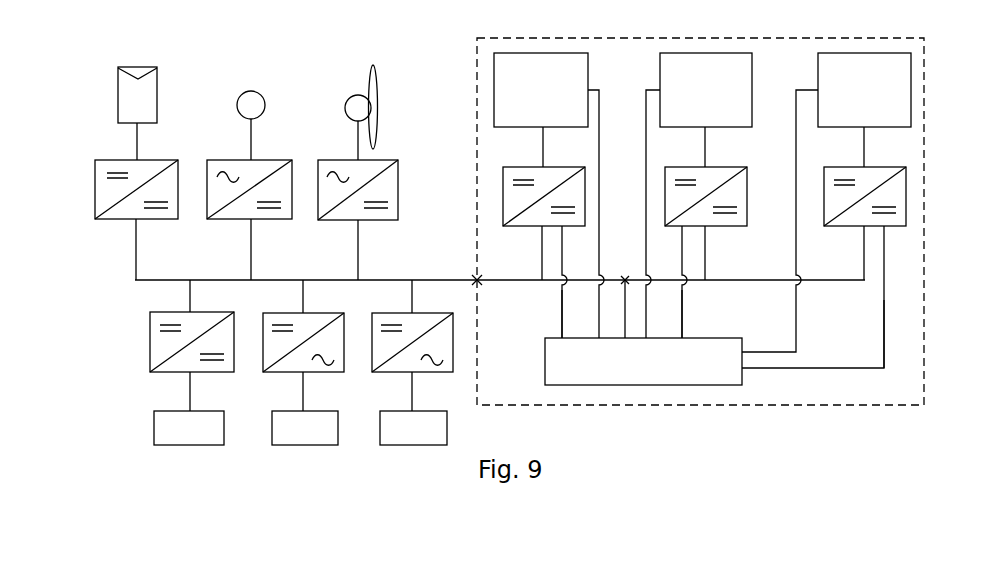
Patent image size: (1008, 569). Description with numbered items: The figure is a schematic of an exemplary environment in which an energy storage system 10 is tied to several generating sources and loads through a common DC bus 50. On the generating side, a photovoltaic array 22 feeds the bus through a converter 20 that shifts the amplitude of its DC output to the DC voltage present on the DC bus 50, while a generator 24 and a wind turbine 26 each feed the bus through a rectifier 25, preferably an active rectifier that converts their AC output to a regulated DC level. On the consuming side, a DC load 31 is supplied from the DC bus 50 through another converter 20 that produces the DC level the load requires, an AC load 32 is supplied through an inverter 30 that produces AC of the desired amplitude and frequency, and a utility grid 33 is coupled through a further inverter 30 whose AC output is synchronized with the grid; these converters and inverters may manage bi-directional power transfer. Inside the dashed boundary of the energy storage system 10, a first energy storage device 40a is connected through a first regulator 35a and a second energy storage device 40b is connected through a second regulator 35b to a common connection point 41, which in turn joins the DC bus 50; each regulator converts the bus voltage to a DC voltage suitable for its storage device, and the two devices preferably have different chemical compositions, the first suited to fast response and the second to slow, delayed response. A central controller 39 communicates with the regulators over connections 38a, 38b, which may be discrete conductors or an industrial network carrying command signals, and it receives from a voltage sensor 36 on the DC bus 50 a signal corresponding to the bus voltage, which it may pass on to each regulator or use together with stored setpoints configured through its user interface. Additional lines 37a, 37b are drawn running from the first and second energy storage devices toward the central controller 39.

The energy storage system 10 is at (615, 38).
The converter 20 is at (157, 220).
The photovoltaic array 22 is at (140, 66).
The generator 24 is at (240, 92).
The rectifier 25 is at (270, 220).
The wind turbine 26 is at (350, 95).
The inverter 30 is at (322, 373).
The DC load 31 is at (153, 418).
The AC load 32 is at (271, 418).
The utility grid 33 is at (379, 418).
The first regulator 35a is at (538, 228).
The second regulator 35b is at (712, 228).
The voltage sensor 36 is at (624, 278).
The first storage signal line 37a is at (600, 158).
The second storage signal line 37b is at (645, 102).
The connection 38a is at (561, 333).
The connection 38b is at (683, 333).
The central controller 39 is at (545, 348).
The first energy storage device 40a is at (541, 132).
The second energy storage device 40b is at (710, 131).
The common connection point 41 is at (474, 278).
The DC bus 50 is at (318, 279).